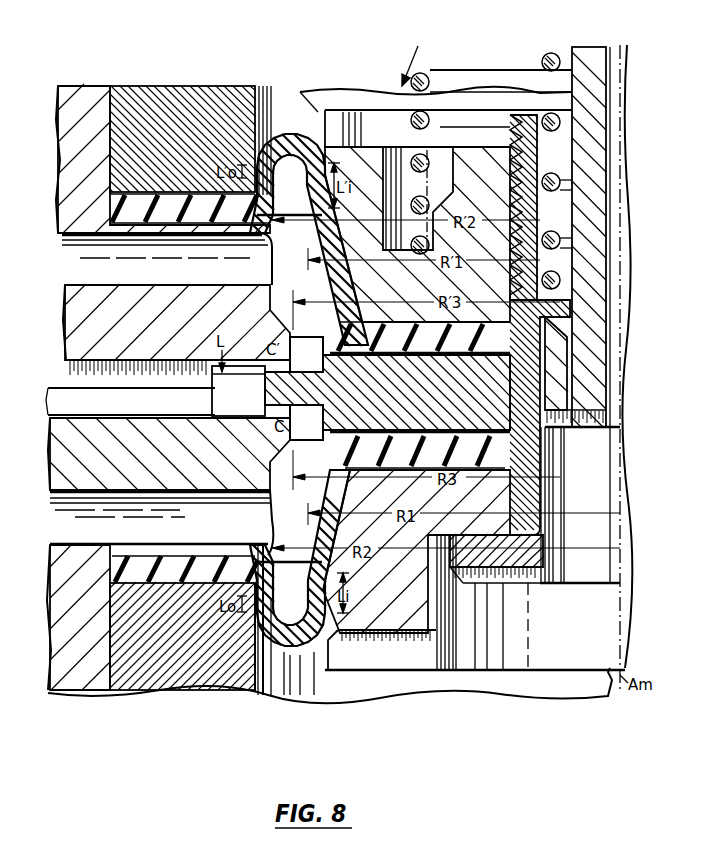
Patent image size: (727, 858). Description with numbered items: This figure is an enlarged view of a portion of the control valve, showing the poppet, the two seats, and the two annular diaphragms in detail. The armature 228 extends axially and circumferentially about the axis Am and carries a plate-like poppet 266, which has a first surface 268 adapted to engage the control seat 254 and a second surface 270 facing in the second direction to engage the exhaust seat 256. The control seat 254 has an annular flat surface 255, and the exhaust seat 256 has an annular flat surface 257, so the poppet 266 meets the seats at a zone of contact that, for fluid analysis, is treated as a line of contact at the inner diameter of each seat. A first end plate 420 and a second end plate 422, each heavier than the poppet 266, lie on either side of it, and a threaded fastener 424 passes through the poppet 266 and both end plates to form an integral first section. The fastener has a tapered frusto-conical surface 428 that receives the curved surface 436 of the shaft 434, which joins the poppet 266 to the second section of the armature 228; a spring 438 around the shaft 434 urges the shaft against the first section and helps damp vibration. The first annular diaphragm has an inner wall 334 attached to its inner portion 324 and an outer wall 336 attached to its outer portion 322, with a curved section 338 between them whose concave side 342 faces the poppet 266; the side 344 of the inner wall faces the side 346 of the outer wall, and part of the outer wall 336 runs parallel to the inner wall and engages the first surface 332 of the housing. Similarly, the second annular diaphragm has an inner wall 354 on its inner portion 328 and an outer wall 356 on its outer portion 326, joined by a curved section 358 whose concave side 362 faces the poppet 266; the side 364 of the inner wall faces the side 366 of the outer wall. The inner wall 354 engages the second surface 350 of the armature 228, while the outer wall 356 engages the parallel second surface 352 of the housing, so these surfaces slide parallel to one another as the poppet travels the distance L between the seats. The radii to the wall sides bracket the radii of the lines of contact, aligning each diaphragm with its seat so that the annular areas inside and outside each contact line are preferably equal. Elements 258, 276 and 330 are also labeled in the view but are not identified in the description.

The armature 228 is at (416, 53).
The control seat 254 is at (62, 446).
The annular flat surface 255 is at (306, 422).
The exhaust seat 256 is at (72, 320).
The annular flat surface 257 is at (306, 354).
The shaft band 258 is at (212, 401).
The poppet 266 is at (404, 400).
The first surface 268 is at (238, 391).
The second surface 270 is at (238, 385).
The stem 276 is at (478, 80).
The outer portion 322 is at (126, 558).
The inner portion 324 is at (488, 428).
The outer portion 326 is at (129, 218).
The inner portion 328 is at (485, 358).
The lower seat 330 is at (326, 672).
The first surface 332 is at (270, 696).
The inner wall 334 is at (336, 612).
The outer wall 336 is at (183, 636).
The curved section 338 is at (290, 696).
The concave side 342 is at (288, 613).
The side 344 is at (288, 570).
The side 346 is at (288, 591).
The second surface 350 is at (320, 110).
The second surface 352 is at (272, 92).
The inner wall 354 is at (328, 160).
The outer wall 356 is at (258, 150).
The curved section 358 is at (298, 134).
The concave side 362 is at (284, 172).
The side 364 is at (284, 205).
The side 366 is at (284, 188).
The first end plate 420 is at (414, 576).
The second end plate 422 is at (494, 203).
The threaded fastener 424 is at (533, 580).
The tapered frusto-conical surface 428 is at (545, 376).
The shaft 434 is at (588, 50).
The curved surface 436 is at (499, 417).
The spring 438 is at (547, 53).